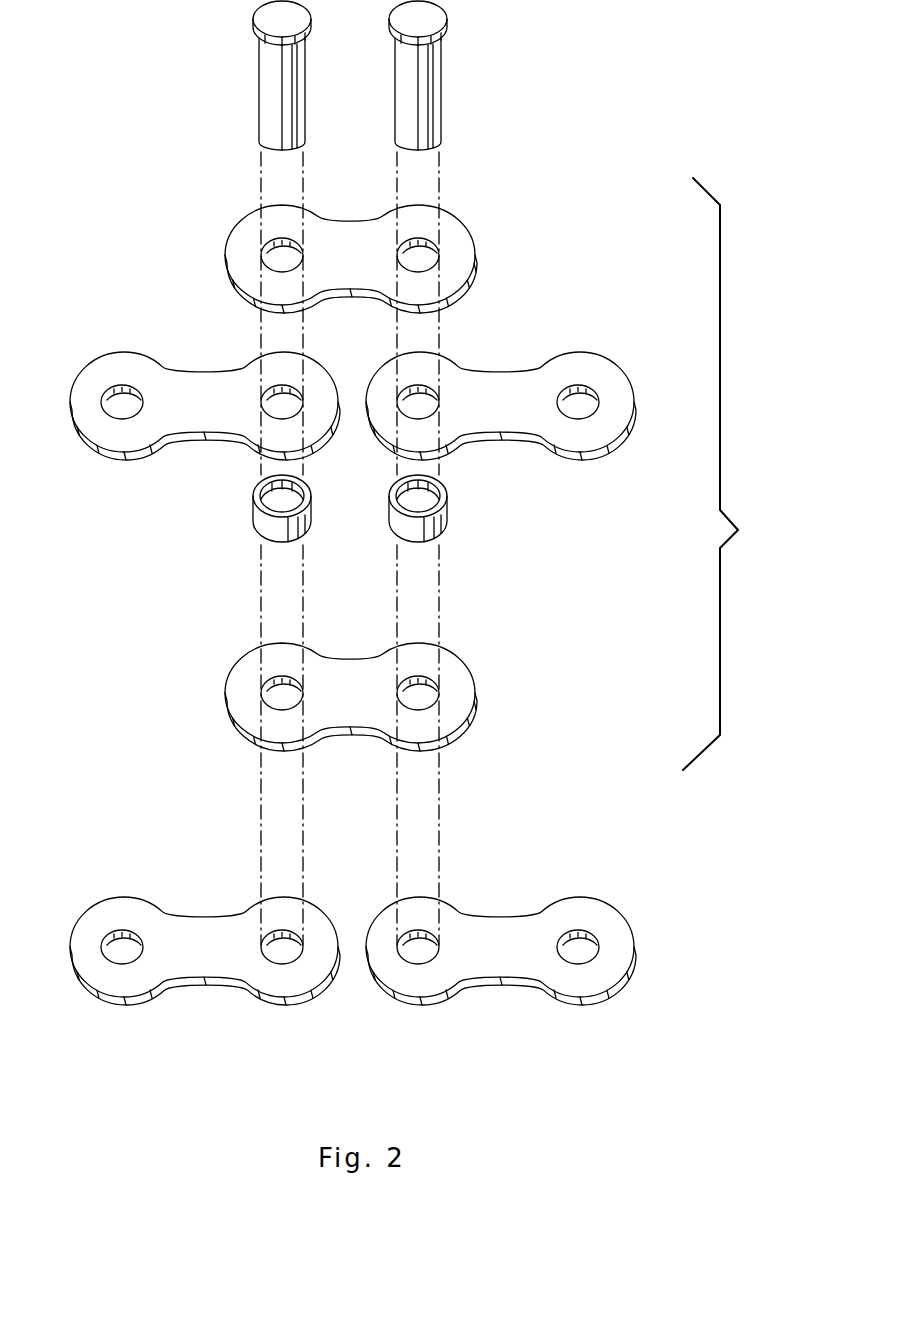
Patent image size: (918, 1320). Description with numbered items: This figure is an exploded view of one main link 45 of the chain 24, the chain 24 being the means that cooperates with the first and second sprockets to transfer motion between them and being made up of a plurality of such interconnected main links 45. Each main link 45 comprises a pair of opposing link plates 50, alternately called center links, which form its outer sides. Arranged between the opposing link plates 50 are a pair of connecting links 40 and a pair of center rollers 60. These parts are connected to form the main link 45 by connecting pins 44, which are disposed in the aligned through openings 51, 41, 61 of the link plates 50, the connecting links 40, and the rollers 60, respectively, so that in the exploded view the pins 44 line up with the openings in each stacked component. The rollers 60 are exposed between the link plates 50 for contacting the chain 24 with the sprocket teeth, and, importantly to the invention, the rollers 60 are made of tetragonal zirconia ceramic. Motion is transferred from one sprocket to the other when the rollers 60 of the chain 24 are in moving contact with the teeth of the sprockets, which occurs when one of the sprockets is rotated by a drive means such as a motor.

The chain 24 is at (700, 45).
The connecting link 40 is at (82, 404).
The through opening of connecting link 41 is at (270, 400).
The connecting pin 44 is at (276, 107).
The main link 45 is at (735, 474).
The link plate 50 is at (462, 247).
The through opening of link plate 51 is at (268, 254).
The center roller 60 is at (266, 520).
The through opening of roller 61 is at (272, 496).